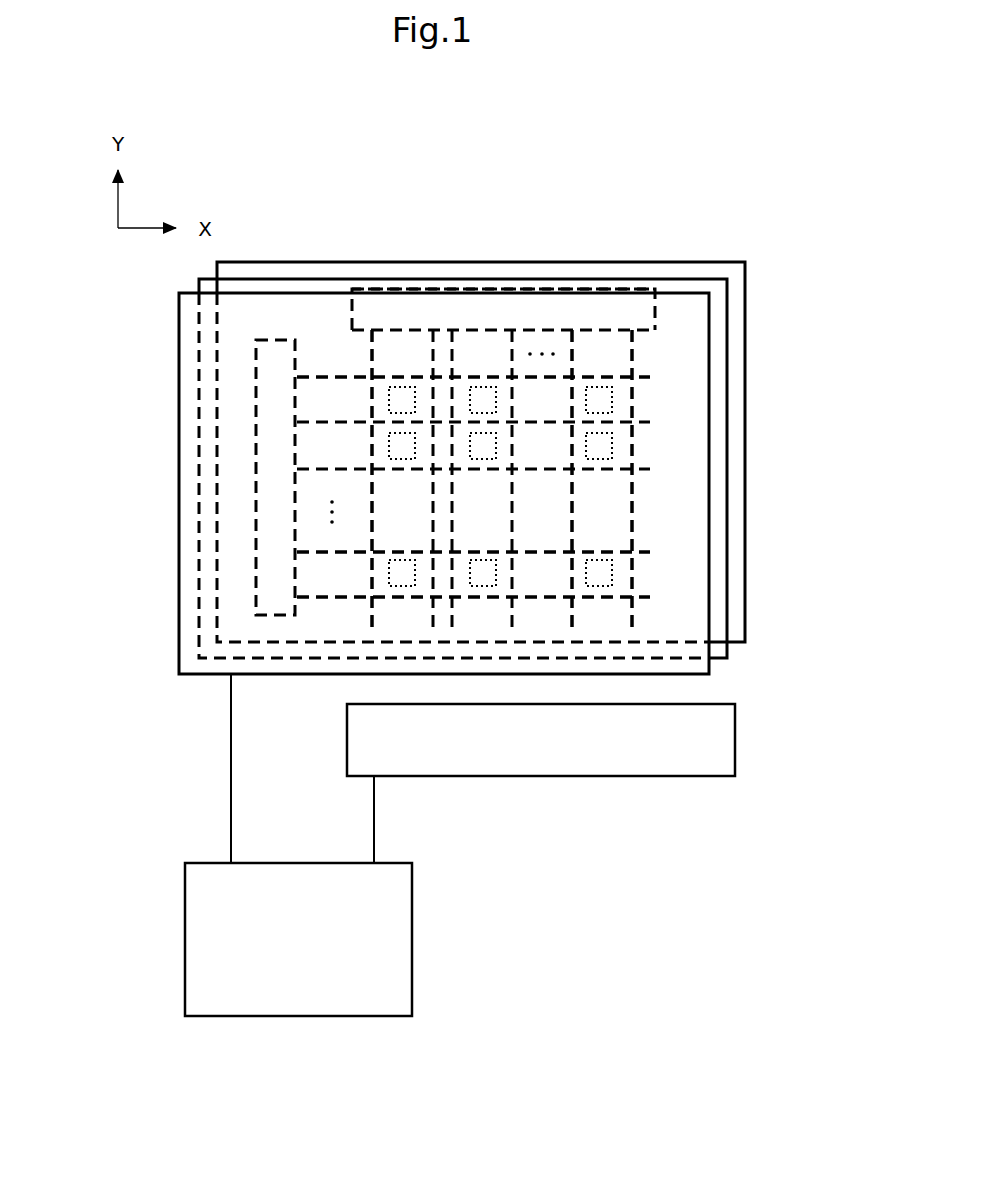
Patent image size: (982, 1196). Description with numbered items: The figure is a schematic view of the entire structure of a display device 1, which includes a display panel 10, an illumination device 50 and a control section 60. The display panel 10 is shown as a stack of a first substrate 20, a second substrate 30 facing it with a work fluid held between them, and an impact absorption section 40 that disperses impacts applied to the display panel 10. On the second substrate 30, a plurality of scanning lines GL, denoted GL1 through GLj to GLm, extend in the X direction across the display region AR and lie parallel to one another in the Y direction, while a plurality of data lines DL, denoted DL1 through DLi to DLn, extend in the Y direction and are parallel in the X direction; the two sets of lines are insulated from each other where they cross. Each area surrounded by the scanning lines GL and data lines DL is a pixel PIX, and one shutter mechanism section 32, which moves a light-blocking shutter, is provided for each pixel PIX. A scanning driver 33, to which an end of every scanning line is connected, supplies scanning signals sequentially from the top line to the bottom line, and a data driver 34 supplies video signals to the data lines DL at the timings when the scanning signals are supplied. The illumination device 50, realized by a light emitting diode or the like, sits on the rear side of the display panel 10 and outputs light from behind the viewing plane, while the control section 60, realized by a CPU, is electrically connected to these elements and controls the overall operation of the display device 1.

The display device 1 is at (457, 119).
The display panel 10 is at (316, 226).
The first substrate 20 is at (750, 283).
The second substrate 30 is at (714, 277).
The impact absorption section 40 is at (675, 287).
The shutter mechanism section 32 is at (616, 470).
The scanning driver 33 is at (272, 588).
The data driver 34 is at (358, 308).
The illumination device 50 is at (563, 762).
The control section 60 is at (388, 937).
The display region AR is at (645, 450).
The pixel PIX is at (461, 597).
The data lines DL is at (664, 197).
The first data line DL1 is at (373, 355).
The i-th data line DLi is at (571, 352).
The n-th data line DLn is at (633, 352).
The scanning lines GL is at (104, 282).
The first scanning line GL1 is at (335, 372).
The j-th scanning line GLj is at (328, 550).
The m-th scanning line GLm is at (328, 596).